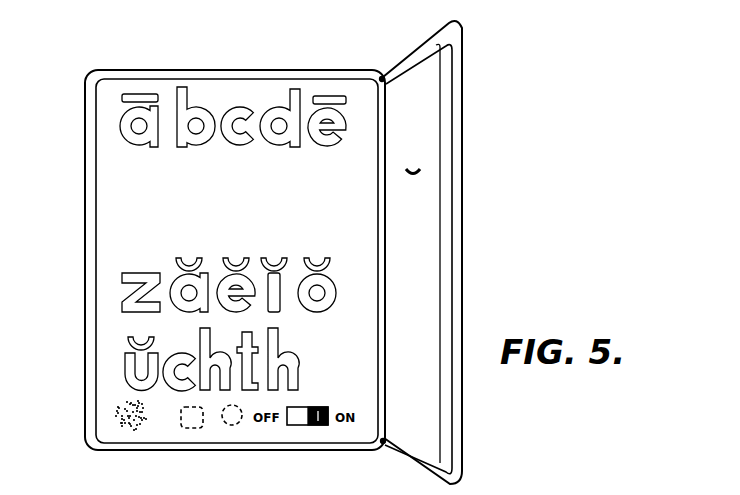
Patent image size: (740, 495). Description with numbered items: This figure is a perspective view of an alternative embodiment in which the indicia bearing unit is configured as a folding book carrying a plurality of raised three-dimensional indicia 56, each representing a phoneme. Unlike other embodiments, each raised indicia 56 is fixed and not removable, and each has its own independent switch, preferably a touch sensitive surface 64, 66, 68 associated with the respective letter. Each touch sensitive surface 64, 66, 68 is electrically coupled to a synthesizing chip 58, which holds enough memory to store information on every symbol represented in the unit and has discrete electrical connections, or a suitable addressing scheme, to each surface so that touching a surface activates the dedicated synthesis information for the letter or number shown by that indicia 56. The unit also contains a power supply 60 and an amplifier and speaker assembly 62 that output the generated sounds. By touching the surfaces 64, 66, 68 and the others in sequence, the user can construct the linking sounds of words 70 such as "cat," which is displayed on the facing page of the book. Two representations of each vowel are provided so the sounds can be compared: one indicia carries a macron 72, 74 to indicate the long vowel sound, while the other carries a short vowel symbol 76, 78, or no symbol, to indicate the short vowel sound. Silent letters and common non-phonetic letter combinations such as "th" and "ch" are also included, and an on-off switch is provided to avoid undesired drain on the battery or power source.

The raised three-dimensional indicia 56 is at (207, 132).
The synthesizing chip 58 is at (192, 429).
The power supply 60 is at (234, 426).
The amplifier and speaker assembly 62 is at (113, 418).
The touch sensitive surface 64 is at (124, 127).
The touch sensitive surface 66 is at (182, 143).
The touch sensitive surface 68 is at (228, 144).
The word 70 is at (419, 150).
The macron 72 is at (328, 95).
The macron 74 is at (138, 93).
The short vowel symbol 76 is at (230, 256).
The short vowel symbol 78 is at (185, 258).